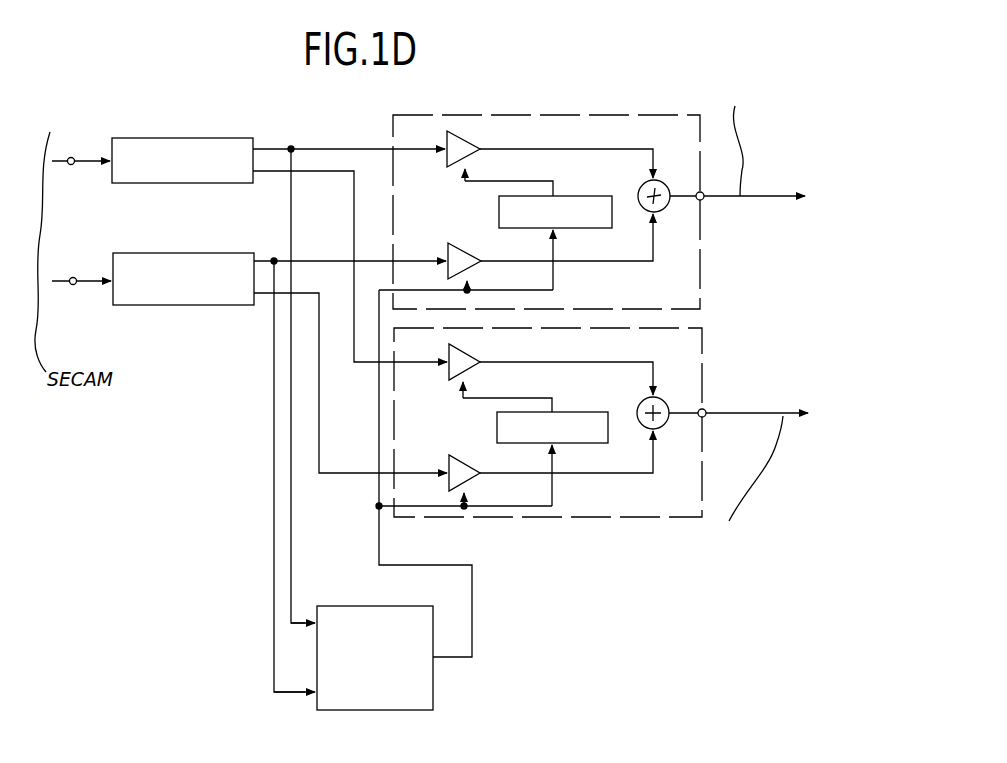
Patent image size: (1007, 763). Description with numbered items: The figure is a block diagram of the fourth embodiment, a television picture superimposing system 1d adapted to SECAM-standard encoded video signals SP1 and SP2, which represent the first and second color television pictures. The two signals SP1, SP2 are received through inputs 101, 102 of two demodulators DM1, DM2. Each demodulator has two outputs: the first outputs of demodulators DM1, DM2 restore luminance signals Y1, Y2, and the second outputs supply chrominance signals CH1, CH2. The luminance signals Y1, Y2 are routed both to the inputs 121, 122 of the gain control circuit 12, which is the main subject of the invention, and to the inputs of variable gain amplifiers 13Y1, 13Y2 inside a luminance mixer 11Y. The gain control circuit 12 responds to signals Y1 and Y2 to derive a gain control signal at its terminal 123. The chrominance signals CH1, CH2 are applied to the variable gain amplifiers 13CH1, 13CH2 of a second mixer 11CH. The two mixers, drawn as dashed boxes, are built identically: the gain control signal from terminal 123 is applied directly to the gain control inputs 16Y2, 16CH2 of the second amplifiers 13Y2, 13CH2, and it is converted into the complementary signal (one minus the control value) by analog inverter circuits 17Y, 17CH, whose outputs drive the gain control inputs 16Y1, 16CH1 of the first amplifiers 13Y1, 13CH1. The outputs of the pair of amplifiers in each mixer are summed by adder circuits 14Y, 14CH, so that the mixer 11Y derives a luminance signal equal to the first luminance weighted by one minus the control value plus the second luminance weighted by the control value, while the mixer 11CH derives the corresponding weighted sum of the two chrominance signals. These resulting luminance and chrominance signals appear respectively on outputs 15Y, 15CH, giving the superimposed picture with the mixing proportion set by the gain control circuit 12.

The picture superimposing system 1d is at (166, 420).
The input of first demodulator 101 is at (67, 167).
The input of second demodulator 102 is at (70, 287).
The first video signal SP1 is at (83, 147).
The second video signal SP2 is at (98, 278).
The first demodulator DM1 is at (176, 130).
The second demodulator DM2 is at (176, 245).
The first luminance signal Y1 is at (362, 147).
The second luminance signal Y2 is at (370, 260).
The first chrominance signal CH1 is at (363, 365).
The second chrominance signal CH2 is at (365, 473).
The luminance mixer 11Y is at (700, 266).
The chrominance mixer 11CH is at (700, 335).
The first luminance variable gain amplifier 13Y1 is at (447, 160).
The second luminance variable gain amplifier 13Y2 is at (448, 251).
The first chrominance variable gain amplifier 13CH1 is at (449, 372).
The second chrominance variable gain amplifier 13CH2 is at (450, 462).
The gain control input of first luminance amplifier 16Y1 is at (467, 167).
The gain control input of second luminance amplifier 16Y2 is at (471, 275).
The gain control input of first chrominance amplifier 16CH1 is at (468, 380).
The gain control input of second chrominance amplifier 16CH2 is at (467, 486).
The luminance analog inverter circuit 17Y is at (583, 195).
The chrominance analog inverter circuit 17CH is at (586, 412).
The luminance adder circuit 14Y is at (663, 183).
The chrominance adder circuit 14CH is at (660, 394).
The luminance output 15Y is at (704, 200).
The chrominance output 15CH is at (706, 418).
The gain control circuit 12 is at (398, 607).
The first input of gain control circuit 121 is at (315, 621).
The second input of gain control circuit 122 is at (307, 696).
The output terminal of gain control circuit 123 is at (440, 660).